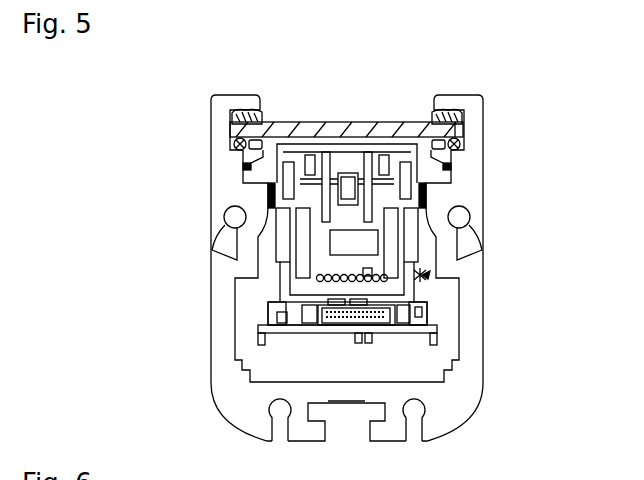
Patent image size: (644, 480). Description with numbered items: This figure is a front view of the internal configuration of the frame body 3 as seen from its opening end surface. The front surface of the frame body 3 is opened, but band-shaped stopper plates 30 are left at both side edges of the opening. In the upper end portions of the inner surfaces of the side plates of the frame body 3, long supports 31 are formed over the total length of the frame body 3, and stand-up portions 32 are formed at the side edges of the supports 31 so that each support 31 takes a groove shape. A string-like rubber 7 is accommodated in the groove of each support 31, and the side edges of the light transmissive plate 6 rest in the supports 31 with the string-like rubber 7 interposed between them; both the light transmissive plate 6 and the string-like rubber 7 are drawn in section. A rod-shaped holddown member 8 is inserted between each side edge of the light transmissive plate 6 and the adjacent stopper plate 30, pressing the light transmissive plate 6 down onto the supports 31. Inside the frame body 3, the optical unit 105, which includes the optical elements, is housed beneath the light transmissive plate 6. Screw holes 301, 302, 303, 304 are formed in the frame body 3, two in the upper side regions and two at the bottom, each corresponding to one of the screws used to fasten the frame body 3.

The frame body 3 is at (472, 325).
The light transmissive plate 6 is at (330, 122).
The string-like rubber 7 is at (463, 135).
The holddown member 8 is at (262, 112).
The stopper plate 30 is at (235, 97).
The support 31 is at (232, 147).
The stand-up portion 32 is at (253, 151).
The optical unit 105 is at (426, 275).
The screw hole 301 is at (242, 218).
The screw hole 302 is at (454, 220).
The screw hole 303 is at (270, 408).
The screw hole 304 is at (423, 408).